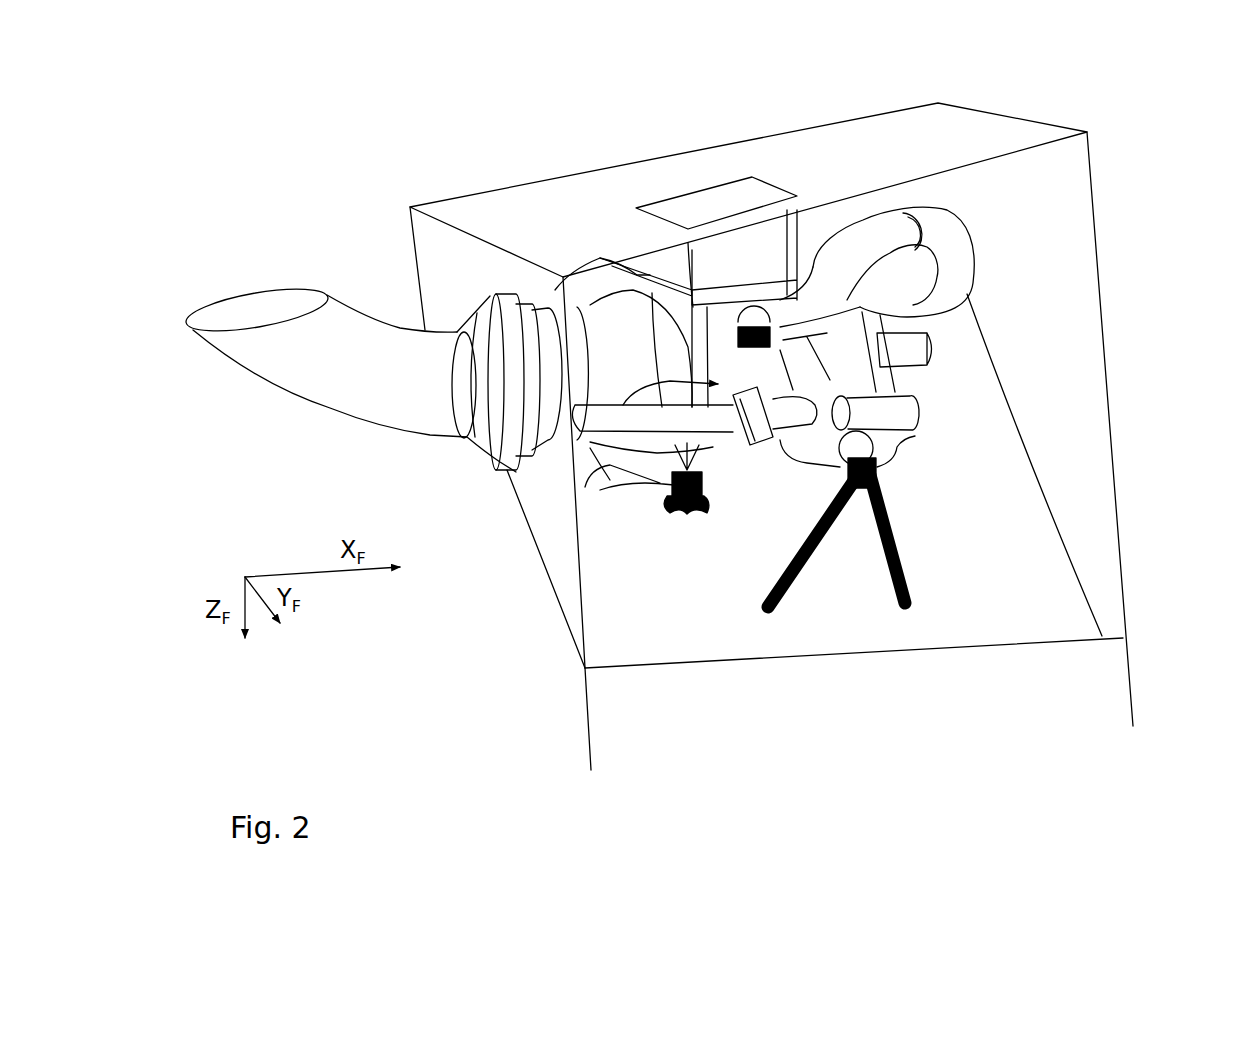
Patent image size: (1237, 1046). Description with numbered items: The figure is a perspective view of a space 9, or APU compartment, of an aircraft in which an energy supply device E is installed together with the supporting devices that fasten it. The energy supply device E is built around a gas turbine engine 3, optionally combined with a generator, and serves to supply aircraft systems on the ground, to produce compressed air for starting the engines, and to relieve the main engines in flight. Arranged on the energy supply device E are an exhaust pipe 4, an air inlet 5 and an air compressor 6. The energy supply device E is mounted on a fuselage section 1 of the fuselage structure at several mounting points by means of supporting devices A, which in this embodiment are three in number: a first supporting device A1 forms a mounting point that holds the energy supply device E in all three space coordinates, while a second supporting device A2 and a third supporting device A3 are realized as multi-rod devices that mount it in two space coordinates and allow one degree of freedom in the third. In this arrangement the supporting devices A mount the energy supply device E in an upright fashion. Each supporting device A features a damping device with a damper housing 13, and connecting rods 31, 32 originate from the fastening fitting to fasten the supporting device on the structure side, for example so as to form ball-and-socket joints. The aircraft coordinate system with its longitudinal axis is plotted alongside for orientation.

The fuselage section 1 is at (760, 632).
The gas turbine engine 3 is at (673, 347).
The exhaust pipe 4 is at (358, 375).
The air inlet 5 is at (725, 252).
The air compressor 6 is at (818, 353).
The space for an energy supply device 9 is at (1057, 332).
The damper housing 13 is at (813, 267).
The connecting rod 31 is at (873, 558).
The connecting rod 32 is at (793, 592).
The supporting device A is at (777, 361).
The first supporting device A1 is at (915, 491).
The second supporting device A2 is at (727, 483).
The third supporting device A3 is at (723, 328).
The energy supply device E is at (620, 482).